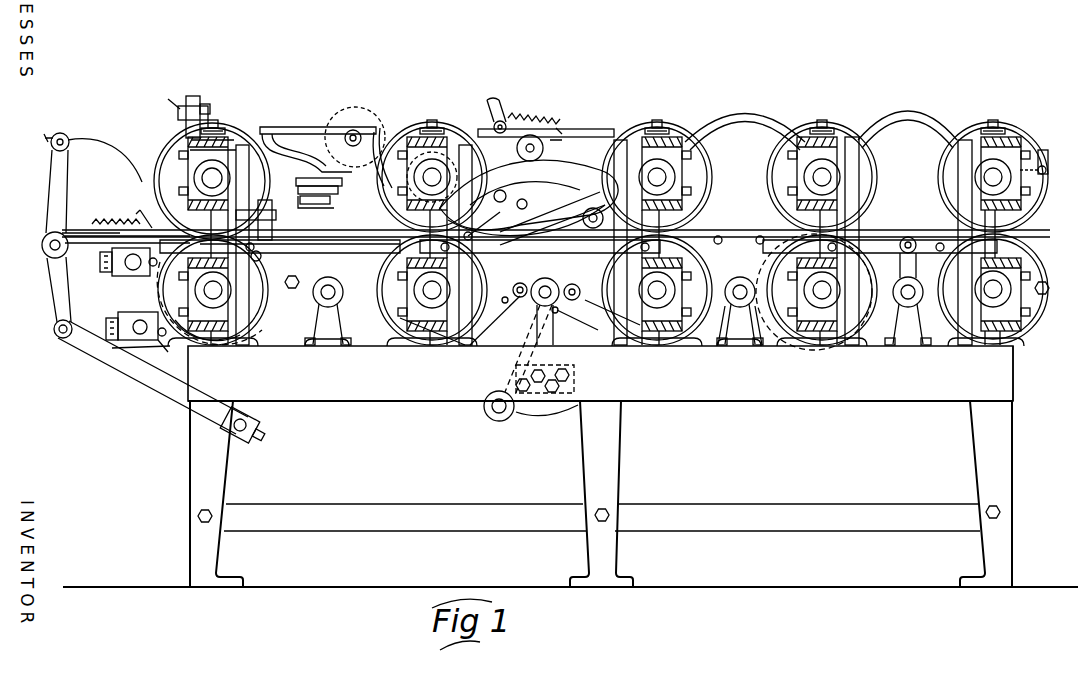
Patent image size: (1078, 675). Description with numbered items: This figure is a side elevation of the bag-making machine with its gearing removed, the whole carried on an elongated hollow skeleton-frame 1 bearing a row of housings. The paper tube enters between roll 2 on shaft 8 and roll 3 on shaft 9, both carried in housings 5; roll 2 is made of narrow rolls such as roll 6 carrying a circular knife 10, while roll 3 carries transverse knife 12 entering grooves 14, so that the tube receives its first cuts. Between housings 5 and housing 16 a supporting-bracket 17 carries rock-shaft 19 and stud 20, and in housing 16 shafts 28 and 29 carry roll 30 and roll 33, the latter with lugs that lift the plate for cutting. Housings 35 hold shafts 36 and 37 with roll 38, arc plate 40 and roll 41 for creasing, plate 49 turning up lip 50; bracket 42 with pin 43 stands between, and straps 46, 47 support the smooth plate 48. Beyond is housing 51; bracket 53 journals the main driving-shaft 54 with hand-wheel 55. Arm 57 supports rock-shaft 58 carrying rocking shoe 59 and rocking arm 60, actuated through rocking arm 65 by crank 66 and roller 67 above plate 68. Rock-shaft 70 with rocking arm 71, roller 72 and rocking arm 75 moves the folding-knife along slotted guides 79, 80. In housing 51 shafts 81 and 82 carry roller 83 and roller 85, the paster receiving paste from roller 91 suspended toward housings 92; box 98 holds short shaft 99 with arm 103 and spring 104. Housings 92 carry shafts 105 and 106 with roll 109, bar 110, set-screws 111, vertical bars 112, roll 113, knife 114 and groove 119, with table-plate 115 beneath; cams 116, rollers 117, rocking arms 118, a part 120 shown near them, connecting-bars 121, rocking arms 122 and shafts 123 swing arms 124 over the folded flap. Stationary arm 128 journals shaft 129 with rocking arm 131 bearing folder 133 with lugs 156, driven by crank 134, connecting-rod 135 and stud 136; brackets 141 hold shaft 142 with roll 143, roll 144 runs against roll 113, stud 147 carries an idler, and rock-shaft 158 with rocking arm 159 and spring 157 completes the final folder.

The skeleton-frame 1 is at (570, 462).
The roll 2 is at (962, 168).
The roll 3 is at (1028, 364).
The housings 5 is at (936, 318).
The narrow roll 6 is at (1025, 196).
The shaft 8 is at (993, 177).
The shaft 9 is at (993, 289).
The knife 10 is at (1048, 164).
The knife 12 is at (1052, 287).
The grooves 14 is at (1049, 177).
The housing 16 is at (852, 180).
The supporting-bracket 17 is at (915, 264).
The rock-shaft 19 is at (908, 245).
The stud 20 is at (908, 311).
The shaft 28 is at (822, 177).
The shaft 29 is at (822, 290).
The roll 30 is at (819, 165).
The roll 33 is at (814, 280).
The housings 35 is at (612, 298).
The shaft 36 is at (657, 177).
The shaft 37 is at (657, 290).
The roll 38 is at (674, 165).
The plate 40 is at (677, 242).
The roll 41 is at (674, 277).
The upright bracket 42 is at (740, 338).
The pin 43 is at (740, 311).
The supporting-strap 46 is at (717, 248).
The supporting-strap 47 is at (759, 248).
The plate 48 is at (556, 238).
The knife-shaped plate 49 is at (700, 142).
The lip 50 is at (504, 190).
The housing 51 is at (452, 372).
The upright bracket 53 is at (545, 330).
The main driving-shaft 54 is at (556, 290).
The hand-wheel 55 is at (546, 302).
The arm 57 is at (532, 154).
The rock-shaft 58 is at (537, 136).
The rocking shoe 59 is at (540, 162).
The rocking arm 60 is at (560, 170).
The rocking arm 65 is at (502, 286).
The crank 66 is at (579, 291).
The roller 67 is at (521, 207).
The plate 68 is at (470, 232).
The rock-shaft 70 is at (496, 416).
The rocking arm 71 is at (506, 416).
The roller 72 is at (520, 283).
The rocking arm 75 is at (509, 305).
The slotted guide 79 is at (552, 218).
The slotted guide 80 is at (602, 208).
The shaft 81 is at (418, 170).
The shaft 82 is at (420, 290).
The cylindrical roller 83 is at (417, 277).
The roller 85 is at (410, 128).
The roller 91 is at (354, 128).
The housings 92 is at (245, 300).
The box 98 is at (491, 121).
The short shaft 99 is at (541, 127).
The arm 103 is at (490, 108).
The spring 104 is at (540, 104).
The shaft 105 is at (190, 176).
The shaft 106 is at (213, 290).
The roll 109 is at (199, 154).
The bar 110 is at (212, 109).
The set-screws 111 is at (160, 96).
The vertical bars 112 is at (200, 100).
The cylindrical roll 113 is at (248, 262).
The knife 114 is at (289, 278).
The table-plate 115 is at (300, 254).
The cams 116 is at (212, 181).
The rollers 117 is at (192, 195).
The rocking arms 118 is at (263, 221).
The groove 119 is at (275, 220).
The pin 120 is at (274, 256).
The connecting-bars 121 is at (329, 202).
The rocking arms 122 is at (329, 185).
The shafts 123 is at (310, 207).
The arms 124 is at (60, 238).
The stationary arm 128 is at (127, 243).
The shaft 129 is at (50, 146).
The rocking arm 131 is at (56, 191).
The folder 133 is at (100, 140).
The crank 134 is at (72, 297).
The connecting-rod 135 is at (153, 377).
The stud 136 is at (258, 424).
The brackets 141 is at (125, 260).
The shaft 142 is at (112, 348).
The roll 143 is at (132, 324).
The cylindrical roll 144 is at (159, 340).
The stud 147 is at (352, 292).
The lugs 156 is at (70, 140).
The spring 157 is at (114, 210).
The rock-shaft 158 is at (157, 256).
The rocking arm 159 is at (139, 213).